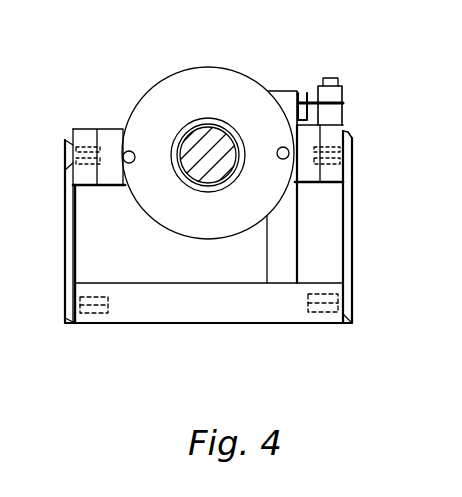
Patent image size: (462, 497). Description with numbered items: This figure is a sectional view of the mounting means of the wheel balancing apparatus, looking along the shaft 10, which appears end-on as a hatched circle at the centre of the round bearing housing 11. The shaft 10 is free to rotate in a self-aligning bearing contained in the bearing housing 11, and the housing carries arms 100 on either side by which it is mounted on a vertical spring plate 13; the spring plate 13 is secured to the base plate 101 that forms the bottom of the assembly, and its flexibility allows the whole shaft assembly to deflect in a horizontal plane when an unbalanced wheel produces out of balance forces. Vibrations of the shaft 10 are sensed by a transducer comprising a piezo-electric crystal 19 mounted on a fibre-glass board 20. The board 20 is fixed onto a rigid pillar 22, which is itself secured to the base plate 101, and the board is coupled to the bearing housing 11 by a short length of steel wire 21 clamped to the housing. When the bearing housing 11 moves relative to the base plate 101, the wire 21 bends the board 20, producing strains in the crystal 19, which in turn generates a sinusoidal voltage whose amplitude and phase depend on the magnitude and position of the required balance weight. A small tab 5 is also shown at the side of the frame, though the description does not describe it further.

The mounting tab 5 is at (360, 160).
The shaft 10 is at (221, 134).
The bearing housing 11 is at (177, 92).
The vertical spring plate 13 is at (65, 266).
The piezo-electric crystal 19 is at (308, 99).
The fibre-glass board 20 is at (299, 92).
The steel wire 21 is at (310, 100).
The rigid pillar 22 is at (290, 270).
The arm 100 is at (110, 171).
The base plate 101 is at (196, 313).